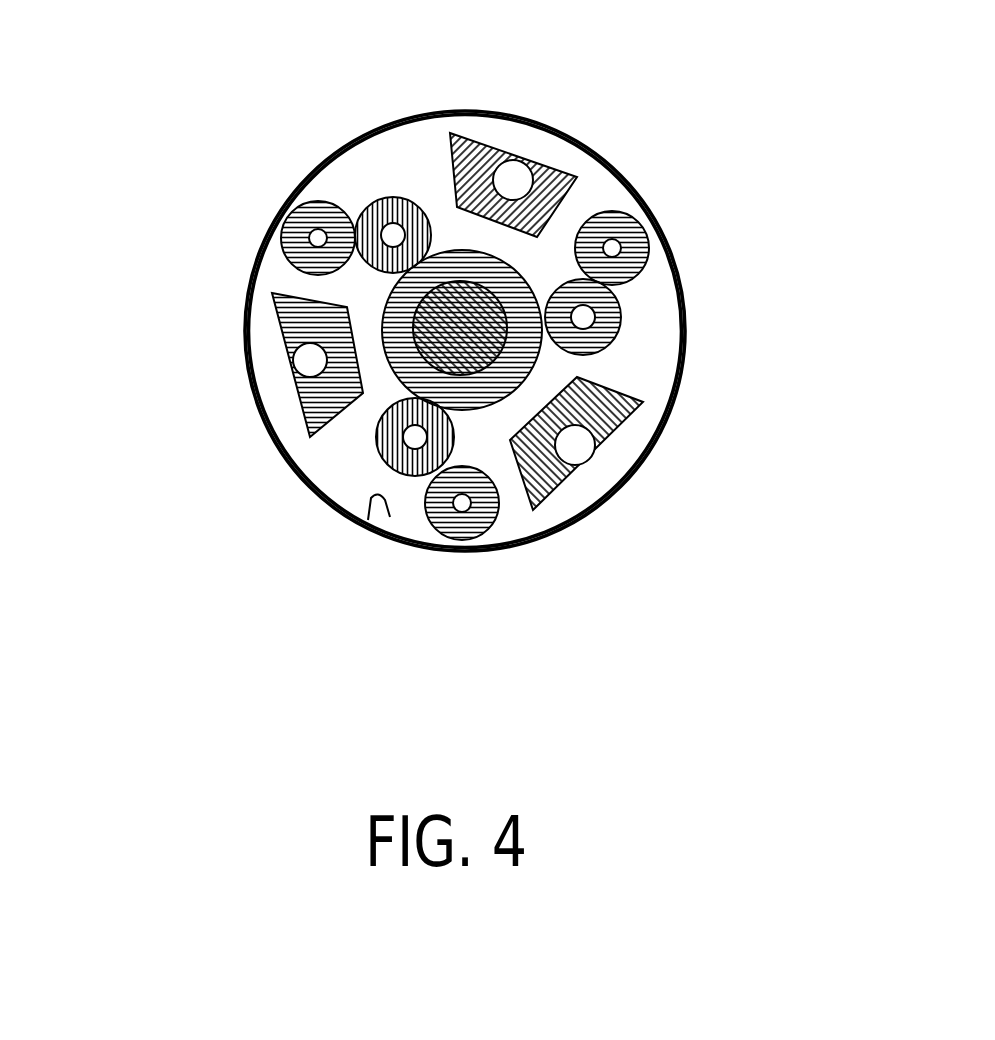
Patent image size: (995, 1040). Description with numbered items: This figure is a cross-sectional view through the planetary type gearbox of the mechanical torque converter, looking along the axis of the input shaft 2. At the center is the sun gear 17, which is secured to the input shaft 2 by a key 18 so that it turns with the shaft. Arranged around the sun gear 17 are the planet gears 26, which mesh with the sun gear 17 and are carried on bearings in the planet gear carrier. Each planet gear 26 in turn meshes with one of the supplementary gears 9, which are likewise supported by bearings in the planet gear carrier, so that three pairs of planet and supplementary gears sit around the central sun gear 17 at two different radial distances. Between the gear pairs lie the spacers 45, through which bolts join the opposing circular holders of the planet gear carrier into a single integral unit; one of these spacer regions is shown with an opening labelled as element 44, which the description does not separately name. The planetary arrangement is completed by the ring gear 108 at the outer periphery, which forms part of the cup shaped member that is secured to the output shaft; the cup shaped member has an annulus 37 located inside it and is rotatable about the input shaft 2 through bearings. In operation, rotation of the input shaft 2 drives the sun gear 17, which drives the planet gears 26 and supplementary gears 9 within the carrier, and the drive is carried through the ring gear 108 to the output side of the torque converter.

The input shaft 2 is at (413, 218).
The supplementary gears 9 is at (312, 240).
The sun gear 17 is at (489, 236).
The key 18 is at (380, 304).
The planet gears 26 is at (365, 205).
The annulus 37 is at (540, 369).
The bore 44 is at (200, 337).
The spacers 45 is at (578, 177).
The ring gear 108 is at (368, 520).